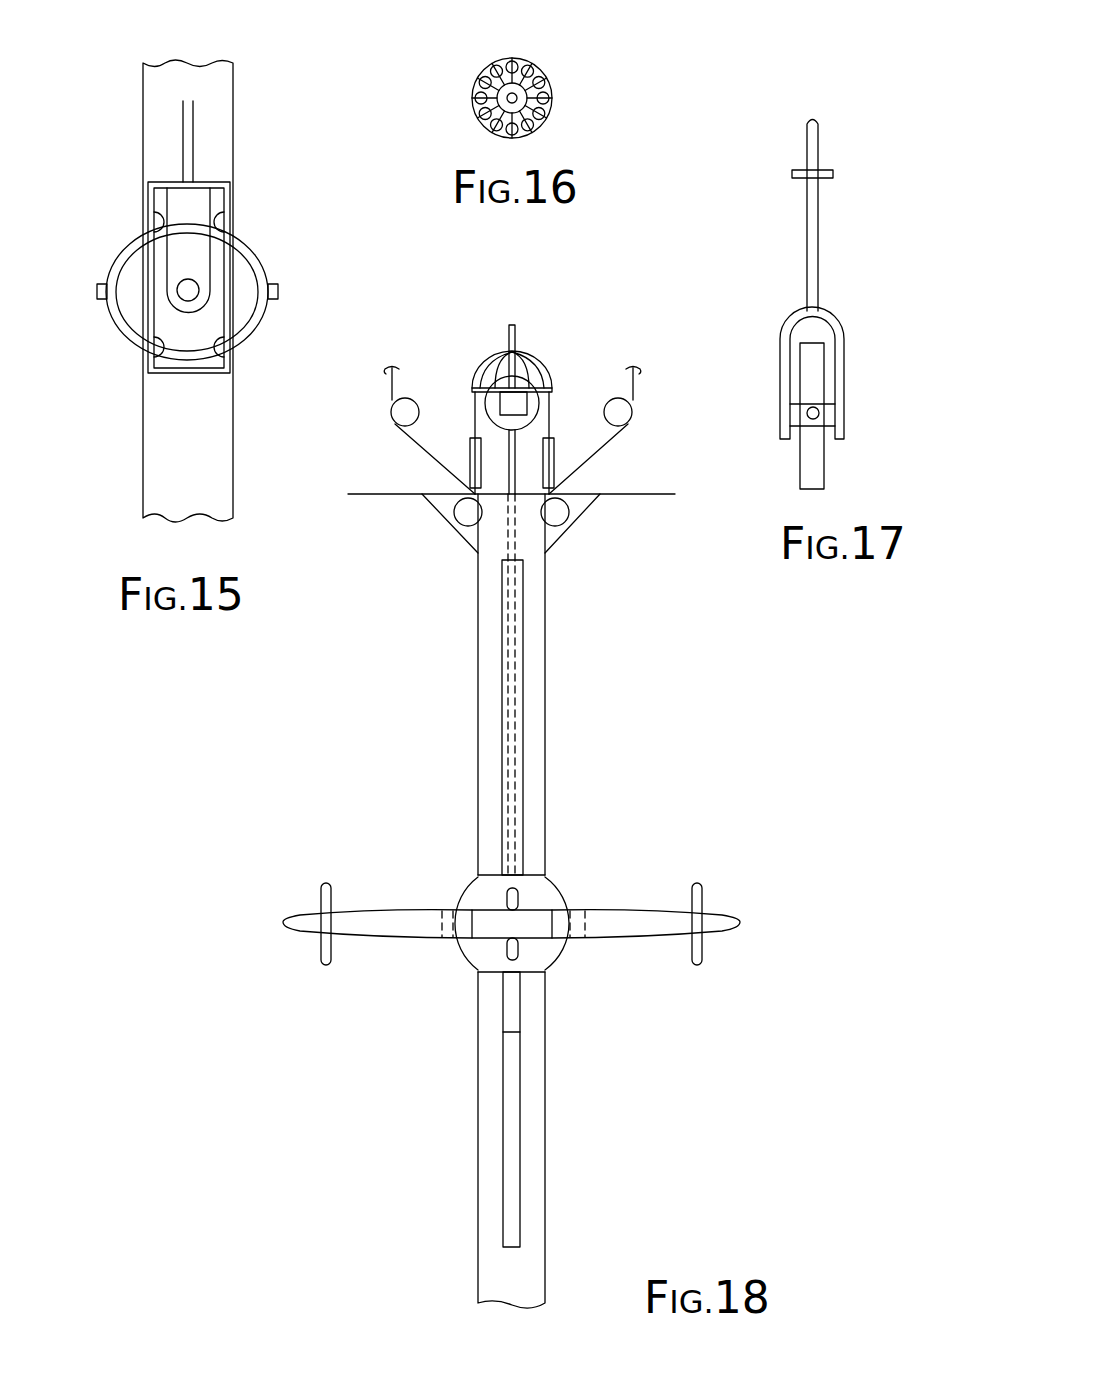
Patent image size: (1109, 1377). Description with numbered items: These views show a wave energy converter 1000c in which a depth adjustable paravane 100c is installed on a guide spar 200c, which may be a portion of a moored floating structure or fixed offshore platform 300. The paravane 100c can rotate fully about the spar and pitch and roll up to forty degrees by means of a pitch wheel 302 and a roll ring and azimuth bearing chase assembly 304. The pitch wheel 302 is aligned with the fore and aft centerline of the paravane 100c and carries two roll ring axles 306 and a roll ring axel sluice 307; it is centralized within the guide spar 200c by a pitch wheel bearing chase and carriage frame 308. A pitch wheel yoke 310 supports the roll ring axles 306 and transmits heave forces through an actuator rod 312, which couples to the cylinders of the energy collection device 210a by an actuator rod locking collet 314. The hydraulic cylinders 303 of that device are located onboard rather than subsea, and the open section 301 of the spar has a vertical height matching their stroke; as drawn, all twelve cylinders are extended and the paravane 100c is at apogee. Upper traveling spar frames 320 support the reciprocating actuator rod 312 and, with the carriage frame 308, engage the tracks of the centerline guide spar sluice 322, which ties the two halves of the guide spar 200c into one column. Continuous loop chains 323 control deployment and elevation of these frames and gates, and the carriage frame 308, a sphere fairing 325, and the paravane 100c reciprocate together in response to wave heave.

In FIG. 15, the guide spar 200c is at (223, 84).
In FIG. 18, the guide spar 200c is at (478, 700).
In FIG. 15, the actuator rod 312 is at (195, 136).
In FIG. 17, the actuator rod 312 is at (820, 136).
In FIG. 18, the actuator rod 312 is at (517, 335).
In FIG. 15, the pitch wheel yoke 310 is at (183, 200).
In FIG. 17, the pitch wheel yoke 310 is at (844, 378).
In FIG. 15, the pitch wheel bearing chase and carriage frame 308 is at (228, 194).
In FIG. 15, the pitch wheel 302 is at (124, 240).
In FIG. 15, the roll ring and azimuth bearing chase assembly 304 is at (113, 332).
In FIG. 18, the roll ring and azimuth bearing chase assembly 304 is at (453, 940).
In FIG. 15, the roll ring axle 306 is at (271, 272).
In FIG. 17, the roll ring axle 306 is at (819, 417).
In FIG. 16, the energy collection device 210a is at (533, 84).
In FIG. 16, the hydraulic cylinder 303 is at (486, 72).
In FIG. 16, the actuator rod locking collet 314 is at (529, 93).
In FIG. 17, the upper traveling spar frame 320 is at (833, 175).
In FIG. 18, the continuous loop chain 323 is at (636, 380).
In FIG. 18, the fixed offshore platform 300 is at (625, 494).
In FIG. 18, the centerline guide spar sluice 322 is at (523, 683).
In FIG. 18, the section open to the sea 301 is at (521, 1017).
In FIG. 18, the paravane 100c is at (615, 908).
In FIG. 18, the roll ring axel sluice 307 is at (507, 900).
In FIG. 18, the sphere fairing 325 is at (556, 964).
In FIG. 18, the wave energy converter 1000c is at (568, 803).